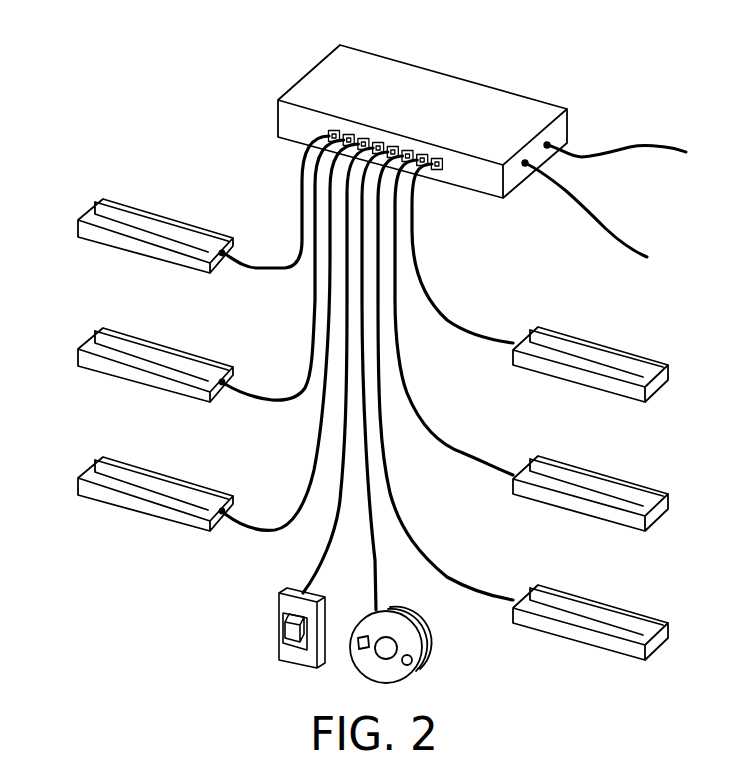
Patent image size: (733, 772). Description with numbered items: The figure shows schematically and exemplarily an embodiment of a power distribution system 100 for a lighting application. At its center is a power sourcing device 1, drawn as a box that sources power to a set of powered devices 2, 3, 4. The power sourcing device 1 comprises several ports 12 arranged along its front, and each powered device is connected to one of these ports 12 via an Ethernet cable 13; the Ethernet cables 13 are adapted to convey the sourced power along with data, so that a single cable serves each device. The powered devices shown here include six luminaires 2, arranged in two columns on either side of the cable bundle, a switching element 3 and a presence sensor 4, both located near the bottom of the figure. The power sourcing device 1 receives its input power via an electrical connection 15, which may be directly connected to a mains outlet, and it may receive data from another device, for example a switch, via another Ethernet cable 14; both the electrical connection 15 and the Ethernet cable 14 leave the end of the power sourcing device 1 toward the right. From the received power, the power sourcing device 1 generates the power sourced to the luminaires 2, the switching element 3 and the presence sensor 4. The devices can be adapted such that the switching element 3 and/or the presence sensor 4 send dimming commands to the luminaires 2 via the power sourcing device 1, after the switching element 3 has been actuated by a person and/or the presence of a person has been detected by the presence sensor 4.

The power distribution system 100 is at (92, 84).
The power sourcing device 1 is at (521, 201).
The ports 12 is at (341, 110).
The Ethernet cables 13 is at (286, 186).
The Ethernet cable 14 is at (635, 147).
The electrical connection 15 is at (627, 240).
The luminaires 2 is at (133, 212).
The switching element 3 is at (282, 623).
The presence sensor 4 is at (420, 660).